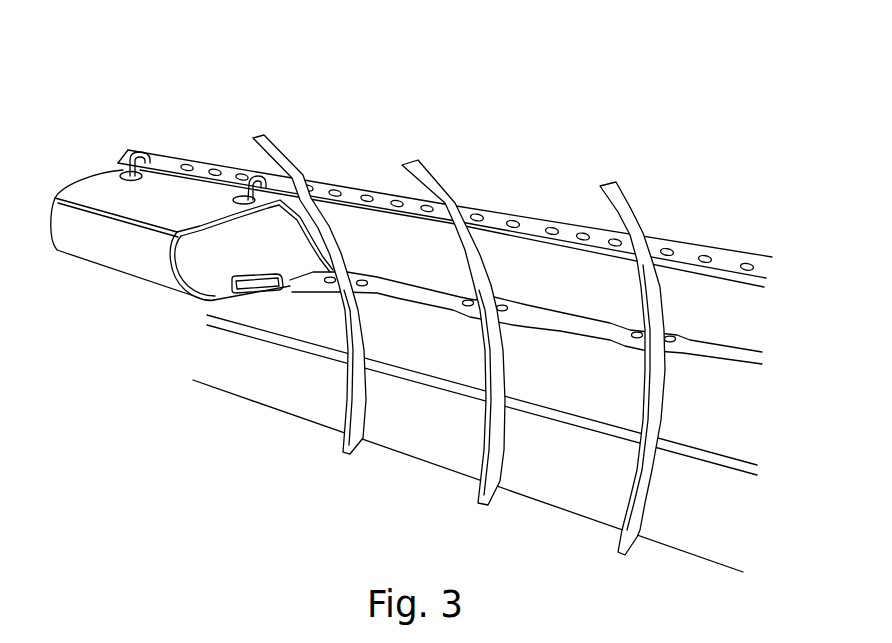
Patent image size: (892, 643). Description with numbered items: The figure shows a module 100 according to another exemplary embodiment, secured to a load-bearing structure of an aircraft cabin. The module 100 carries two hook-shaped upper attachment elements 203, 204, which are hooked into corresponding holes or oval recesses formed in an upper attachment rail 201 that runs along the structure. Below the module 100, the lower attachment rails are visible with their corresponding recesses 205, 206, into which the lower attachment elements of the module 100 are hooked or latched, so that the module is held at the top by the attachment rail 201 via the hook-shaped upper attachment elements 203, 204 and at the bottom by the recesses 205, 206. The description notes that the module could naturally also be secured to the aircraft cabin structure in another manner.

The module 100 is at (120, 258).
The attachment rail 201 is at (182, 150).
The hook-shaped upper attachment element 203 is at (140, 150).
The hook-shaped upper attachment element 204 is at (256, 177).
The recess 205 is at (366, 281).
The recess 206 is at (466, 308).